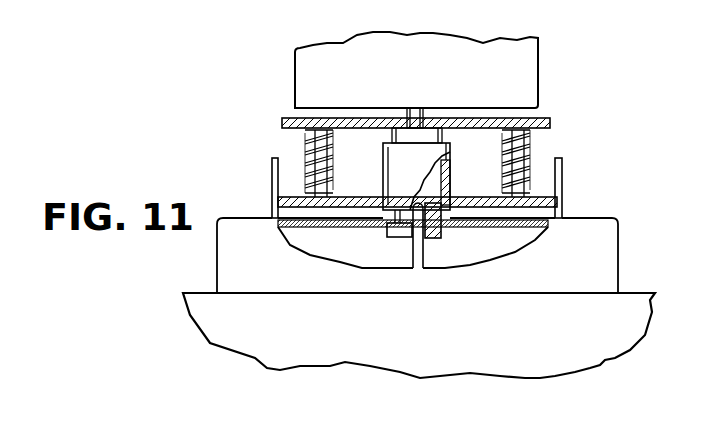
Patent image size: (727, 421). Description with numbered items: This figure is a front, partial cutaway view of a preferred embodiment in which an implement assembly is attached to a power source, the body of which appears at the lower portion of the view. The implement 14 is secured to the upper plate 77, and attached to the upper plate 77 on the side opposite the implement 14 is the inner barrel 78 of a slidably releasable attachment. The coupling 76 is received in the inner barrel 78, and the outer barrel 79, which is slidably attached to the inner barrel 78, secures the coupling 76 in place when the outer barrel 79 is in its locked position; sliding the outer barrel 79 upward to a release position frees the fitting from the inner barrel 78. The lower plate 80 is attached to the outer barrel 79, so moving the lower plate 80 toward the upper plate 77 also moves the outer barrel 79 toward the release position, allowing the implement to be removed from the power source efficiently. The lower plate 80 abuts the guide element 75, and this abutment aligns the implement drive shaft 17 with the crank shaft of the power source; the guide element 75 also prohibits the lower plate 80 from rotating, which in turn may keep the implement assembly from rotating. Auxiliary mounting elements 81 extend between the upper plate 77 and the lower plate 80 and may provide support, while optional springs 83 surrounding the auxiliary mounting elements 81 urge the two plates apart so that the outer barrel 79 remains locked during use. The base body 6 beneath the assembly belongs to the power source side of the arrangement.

The base body 6 is at (616, 220).
The implement 14 is at (436, 62).
The implement drive shaft 17 is at (428, 256).
The guide element 75 is at (270, 182).
The coupling 76 is at (392, 244).
The upper plate 77 is at (548, 119).
The inner barrel 78 is at (405, 128).
The outer barrel 79 is at (445, 155).
The lower plate 80 is at (280, 226).
The auxiliary mounting elements 81 is at (302, 138).
The springs 83 is at (306, 175).